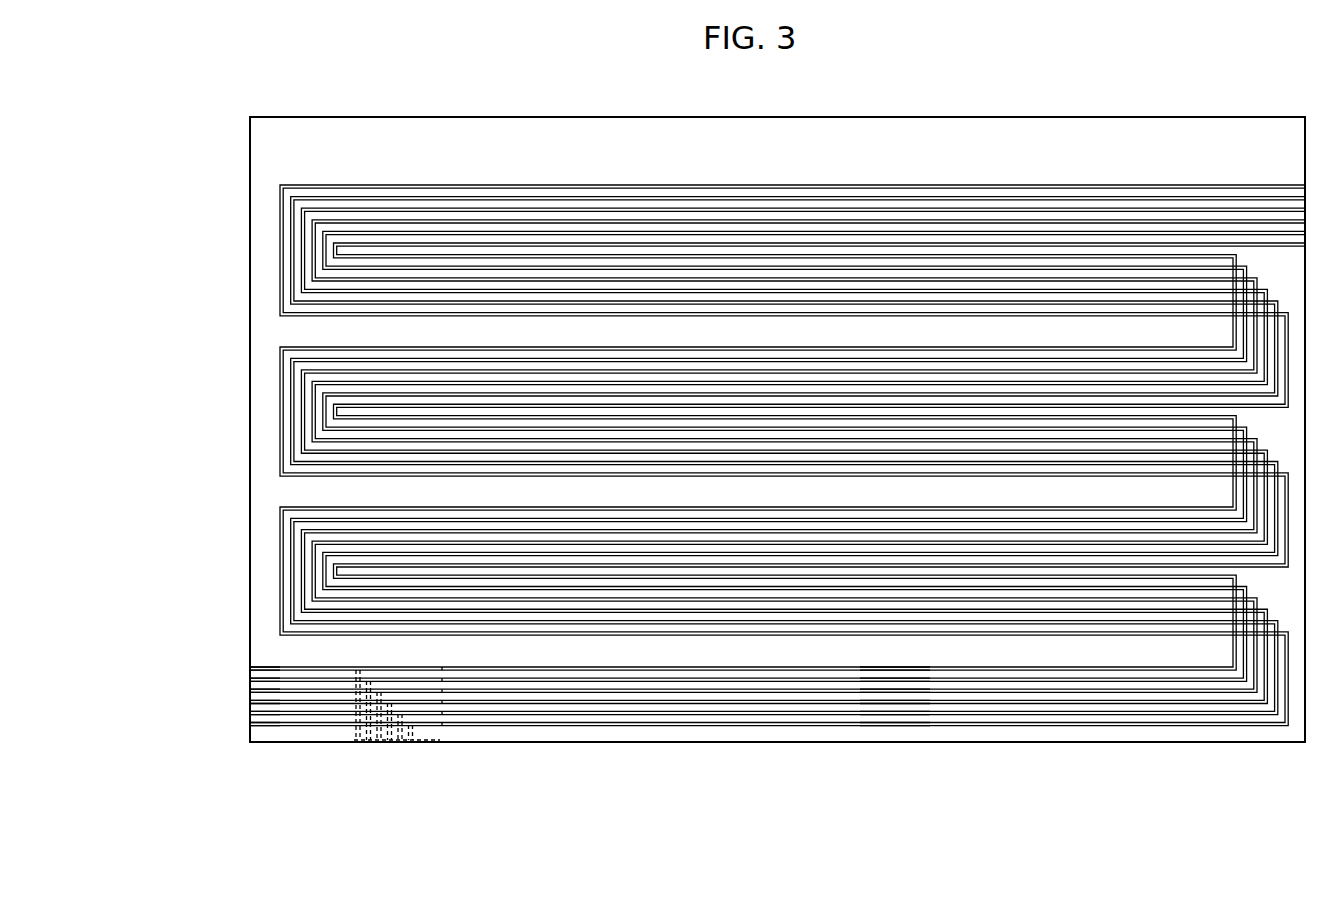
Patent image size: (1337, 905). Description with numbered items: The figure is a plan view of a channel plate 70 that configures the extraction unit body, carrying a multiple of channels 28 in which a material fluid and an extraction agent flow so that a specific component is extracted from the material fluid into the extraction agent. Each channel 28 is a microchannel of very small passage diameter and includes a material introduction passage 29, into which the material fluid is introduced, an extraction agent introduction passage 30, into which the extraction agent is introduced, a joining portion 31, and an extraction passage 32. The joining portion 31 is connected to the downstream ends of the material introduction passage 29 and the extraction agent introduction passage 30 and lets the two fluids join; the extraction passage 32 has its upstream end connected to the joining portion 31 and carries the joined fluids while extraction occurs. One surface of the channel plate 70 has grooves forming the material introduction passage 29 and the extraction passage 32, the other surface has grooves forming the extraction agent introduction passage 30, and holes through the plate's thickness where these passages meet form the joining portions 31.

The channel plate 70 is at (1255, 90).
The channel 28 is at (777, 455).
The material introduction passage 29 is at (256, 669).
The extraction agent introduction passage 30 is at (408, 738).
The joining portion 31 is at (445, 669).
The extraction passage 32 is at (920, 669).